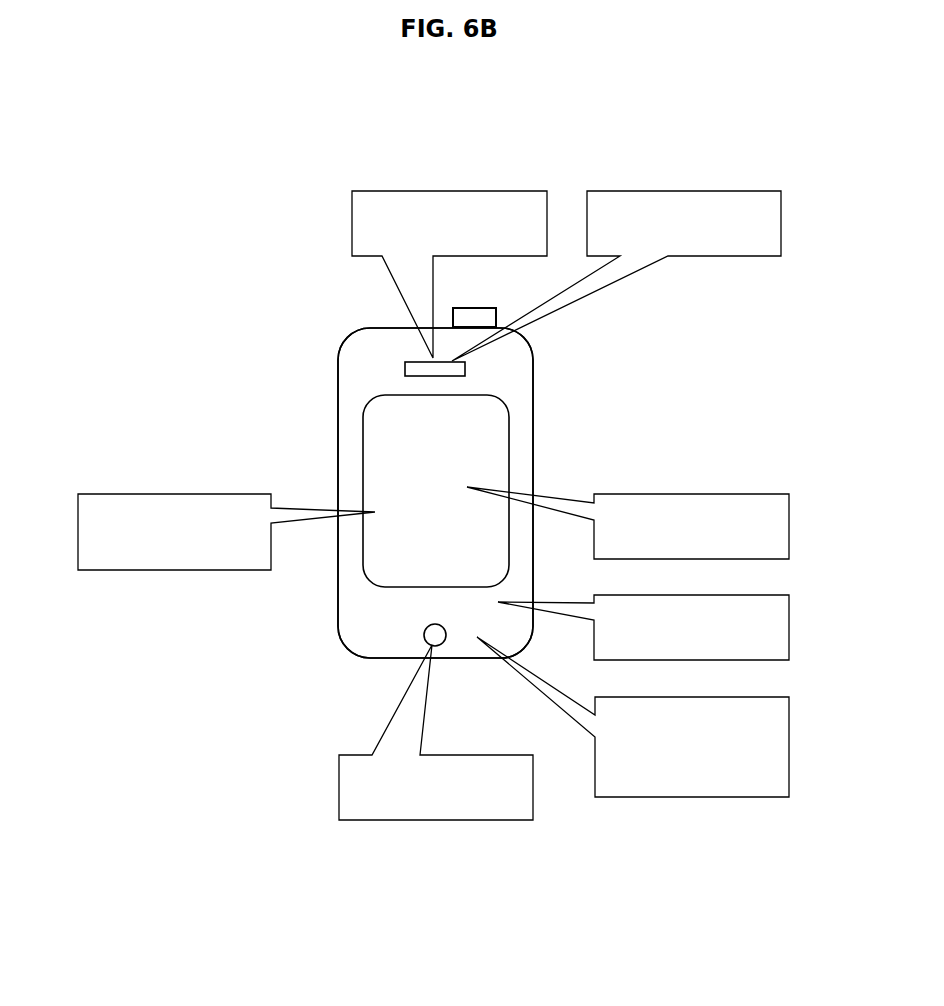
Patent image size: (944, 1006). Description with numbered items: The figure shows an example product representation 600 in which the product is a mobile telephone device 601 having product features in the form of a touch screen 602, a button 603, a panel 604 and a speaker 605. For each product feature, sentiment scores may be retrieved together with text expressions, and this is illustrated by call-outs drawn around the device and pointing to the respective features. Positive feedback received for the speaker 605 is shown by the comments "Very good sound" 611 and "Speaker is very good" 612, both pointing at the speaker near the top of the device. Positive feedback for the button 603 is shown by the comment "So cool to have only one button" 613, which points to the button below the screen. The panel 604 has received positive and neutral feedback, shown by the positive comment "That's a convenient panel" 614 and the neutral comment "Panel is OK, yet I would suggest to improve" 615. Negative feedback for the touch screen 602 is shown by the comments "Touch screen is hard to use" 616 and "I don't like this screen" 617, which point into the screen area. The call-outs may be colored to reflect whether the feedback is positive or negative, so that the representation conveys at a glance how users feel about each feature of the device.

The product representation 600 is at (226, 328).
The mobile telephone device 601 is at (338, 365).
The touch screen 602 is at (363, 468).
The button 603 is at (427, 642).
The panel 604 is at (519, 447).
The speaker 605 is at (462, 361).
The comment "Very good sound" 611 is at (352, 212).
The comment "Speaker is very good" 612 is at (657, 191).
The comment "So cool to have only one button" 613 is at (483, 820).
The comment "That's a convenient panel" 614 is at (789, 617).
The comment "Panel is OK, yet I would suggest to improve" 615 is at (789, 758).
The comment "Touch screen is hard to use" 616 is at (137, 570).
The comment "I don't like this screen" 617 is at (789, 540).